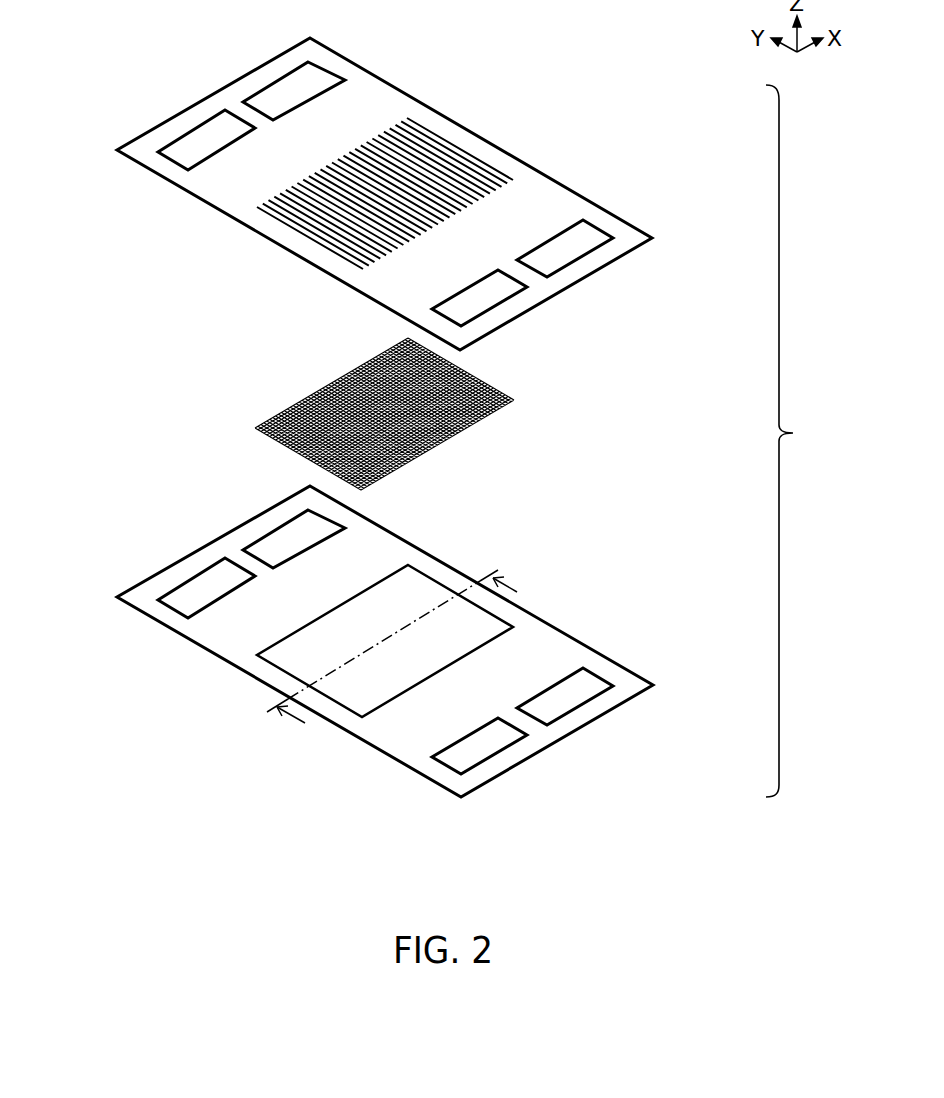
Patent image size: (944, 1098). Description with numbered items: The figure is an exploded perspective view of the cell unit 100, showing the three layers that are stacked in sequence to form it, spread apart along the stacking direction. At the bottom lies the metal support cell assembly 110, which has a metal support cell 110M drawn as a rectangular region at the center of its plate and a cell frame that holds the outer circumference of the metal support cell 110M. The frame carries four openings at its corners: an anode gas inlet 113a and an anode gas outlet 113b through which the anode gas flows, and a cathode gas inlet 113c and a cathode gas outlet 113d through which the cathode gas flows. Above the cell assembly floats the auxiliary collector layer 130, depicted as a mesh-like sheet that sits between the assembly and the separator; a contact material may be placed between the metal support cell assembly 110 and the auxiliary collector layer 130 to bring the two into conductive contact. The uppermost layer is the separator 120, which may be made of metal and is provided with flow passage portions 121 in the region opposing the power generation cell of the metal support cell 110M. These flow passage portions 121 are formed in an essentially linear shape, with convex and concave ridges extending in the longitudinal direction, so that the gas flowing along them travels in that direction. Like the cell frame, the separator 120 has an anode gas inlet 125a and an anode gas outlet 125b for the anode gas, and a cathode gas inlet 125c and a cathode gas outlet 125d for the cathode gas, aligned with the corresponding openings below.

The cell unit 100 is at (803, 441).
The metal support cell assembly 110 is at (661, 680).
The metal support cell 110M is at (415, 587).
The anode gas inlet 113a is at (600, 690).
The anode gas outlet 113b is at (170, 592).
The cathode gas inlet 113c is at (520, 740).
The cathode gas outlet 113d is at (253, 543).
The separator 120 is at (658, 235).
The flow passage portions 121 is at (492, 162).
The anode gas inlet 125a is at (603, 243).
The anode gas outlet 125b is at (170, 144).
The cathode gas inlet 125c is at (523, 295).
The cathode gas outlet 125d is at (245, 95).
The auxiliary collector layer 130 is at (521, 399).